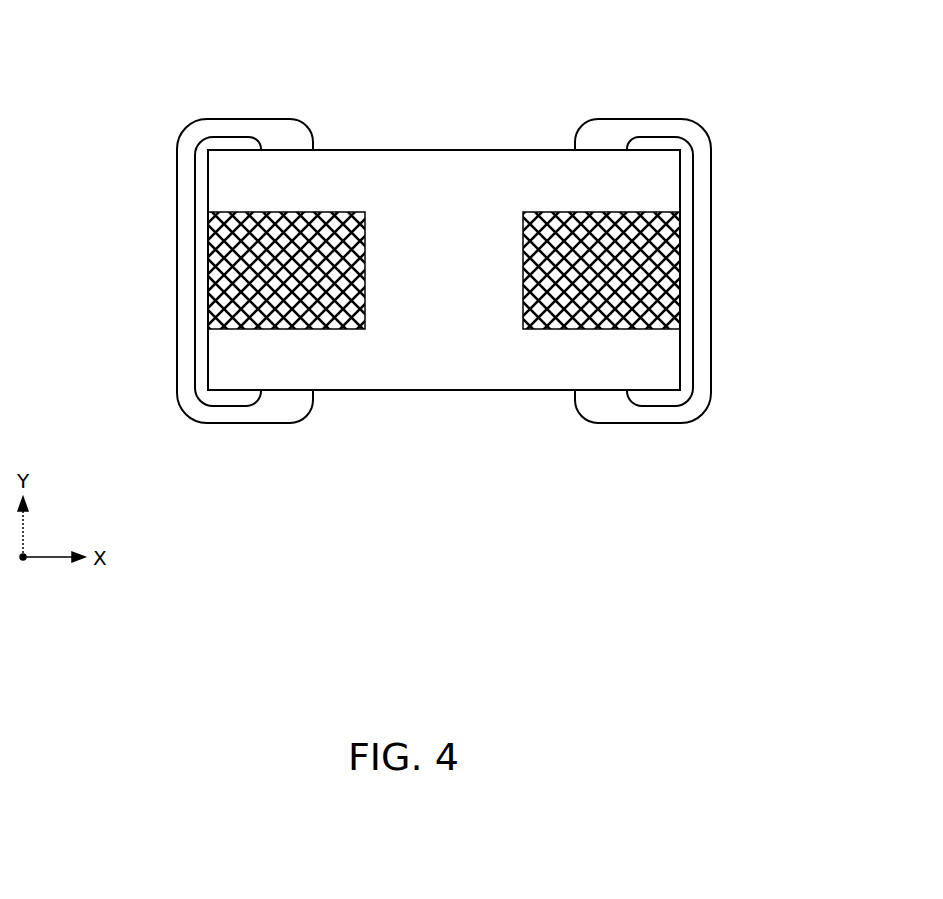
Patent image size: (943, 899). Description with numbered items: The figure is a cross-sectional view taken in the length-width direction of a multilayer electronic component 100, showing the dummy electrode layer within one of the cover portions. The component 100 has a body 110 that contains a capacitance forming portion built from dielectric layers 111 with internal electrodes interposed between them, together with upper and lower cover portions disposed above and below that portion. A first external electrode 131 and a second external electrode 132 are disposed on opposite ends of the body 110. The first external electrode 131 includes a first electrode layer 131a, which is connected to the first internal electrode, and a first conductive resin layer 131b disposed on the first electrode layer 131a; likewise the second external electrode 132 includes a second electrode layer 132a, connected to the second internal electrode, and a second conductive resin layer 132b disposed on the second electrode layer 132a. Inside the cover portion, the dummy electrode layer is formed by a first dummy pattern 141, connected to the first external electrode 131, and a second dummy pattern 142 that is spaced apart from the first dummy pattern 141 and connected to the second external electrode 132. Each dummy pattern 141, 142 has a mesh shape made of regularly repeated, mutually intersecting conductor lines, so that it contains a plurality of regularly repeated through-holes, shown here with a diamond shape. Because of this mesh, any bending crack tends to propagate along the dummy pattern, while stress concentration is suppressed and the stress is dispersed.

The multilayer electronic component 100 is at (145, 43).
The body 110 is at (446, 150).
The dielectric layer 111 is at (363, 168).
The first external electrode 131 is at (97, 259).
The first electrode layer 131a is at (203, 268).
The first conductive resin layer 131b is at (192, 291).
The second external electrode 132 is at (797, 255).
The second electrode layer 132a is at (684, 260).
The second conductive resin layer 132b is at (697, 287).
The first dummy pattern 141 is at (270, 330).
The second dummy pattern 142 is at (560, 330).